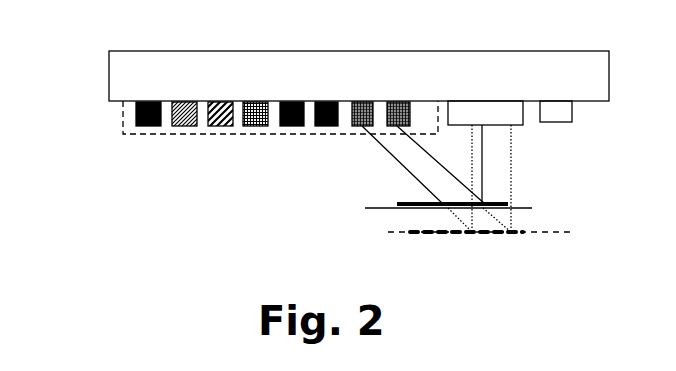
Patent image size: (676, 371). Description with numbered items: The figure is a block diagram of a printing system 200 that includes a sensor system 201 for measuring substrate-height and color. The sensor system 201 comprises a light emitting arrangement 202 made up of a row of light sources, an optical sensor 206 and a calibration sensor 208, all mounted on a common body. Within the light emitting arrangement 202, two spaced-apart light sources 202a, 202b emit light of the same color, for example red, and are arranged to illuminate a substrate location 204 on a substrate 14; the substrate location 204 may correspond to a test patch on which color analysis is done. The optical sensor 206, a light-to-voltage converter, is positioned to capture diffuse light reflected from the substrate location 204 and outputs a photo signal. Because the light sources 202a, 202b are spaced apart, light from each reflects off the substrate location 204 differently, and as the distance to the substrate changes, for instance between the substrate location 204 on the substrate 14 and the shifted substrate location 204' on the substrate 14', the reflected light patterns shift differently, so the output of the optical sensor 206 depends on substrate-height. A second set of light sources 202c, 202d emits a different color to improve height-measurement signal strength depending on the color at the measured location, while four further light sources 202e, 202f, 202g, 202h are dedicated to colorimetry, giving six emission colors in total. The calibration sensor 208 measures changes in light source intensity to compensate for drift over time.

The printing system 200 is at (175, 41).
The sensor system 201 is at (220, 180).
The light emitting arrangement 202 is at (123, 121).
The light source 202a is at (406, 101).
The light source 202b is at (360, 101).
The light source 202c is at (328, 101).
The light source 202d is at (292, 126).
The light source 202e is at (258, 101).
The light source 202f is at (213, 101).
The light source 202g is at (195, 101).
The light source 202h is at (141, 126).
The substrate location 204 is at (419, 192).
The substrate location 204' is at (503, 221).
The optical sensor 206 is at (467, 108).
The calibration sensor 208 is at (562, 108).
The substrate 14 is at (423, 223).
The substrate 14' is at (508, 249).